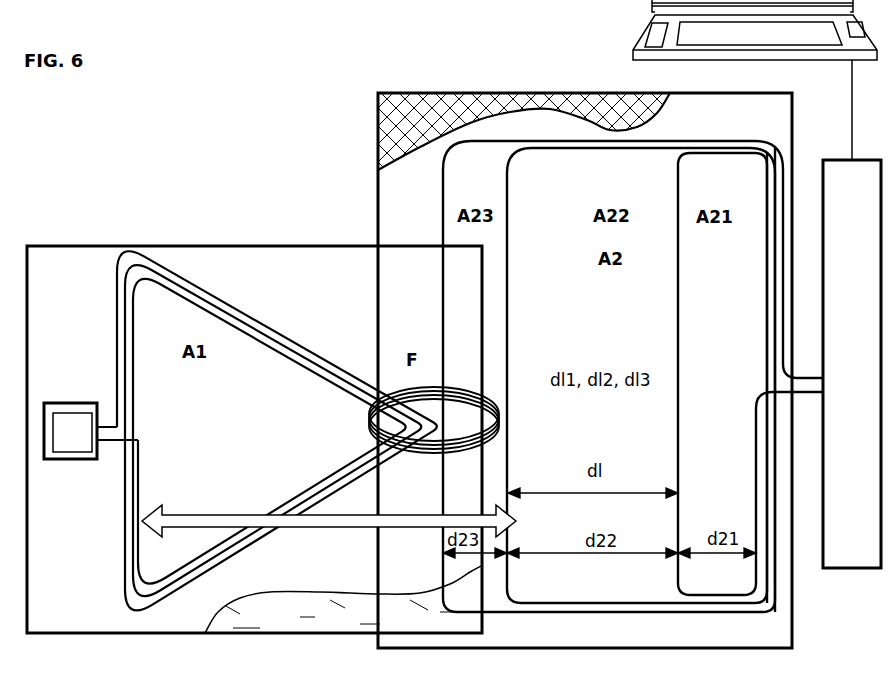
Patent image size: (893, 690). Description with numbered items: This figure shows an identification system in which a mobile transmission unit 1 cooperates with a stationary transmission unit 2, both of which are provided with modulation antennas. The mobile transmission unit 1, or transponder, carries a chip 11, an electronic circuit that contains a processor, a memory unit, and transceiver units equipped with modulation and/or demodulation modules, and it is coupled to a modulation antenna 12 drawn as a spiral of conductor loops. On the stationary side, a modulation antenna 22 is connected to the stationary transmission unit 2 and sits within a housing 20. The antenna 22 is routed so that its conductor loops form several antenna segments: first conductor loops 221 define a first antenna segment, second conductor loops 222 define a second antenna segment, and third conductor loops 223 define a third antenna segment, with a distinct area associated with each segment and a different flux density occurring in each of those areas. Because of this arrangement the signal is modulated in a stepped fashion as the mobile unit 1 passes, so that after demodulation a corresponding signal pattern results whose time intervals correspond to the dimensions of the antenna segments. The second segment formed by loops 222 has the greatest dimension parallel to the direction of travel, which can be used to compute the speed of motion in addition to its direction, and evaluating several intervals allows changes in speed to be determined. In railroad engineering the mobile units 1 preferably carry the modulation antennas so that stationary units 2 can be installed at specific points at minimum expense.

The mobile transmission unit 1 is at (82, 243).
The chip 11 is at (66, 400).
The modulation antenna 12 is at (175, 270).
The stationary transmission unit 2 is at (852, 364).
The housing 20 is at (470, 95).
The modulation antenna 22 is at (633, 317).
The first conductor loops 221 is at (680, 166).
The second conductor loops 222 is at (509, 175).
The third conductor loops 223 is at (445, 172).